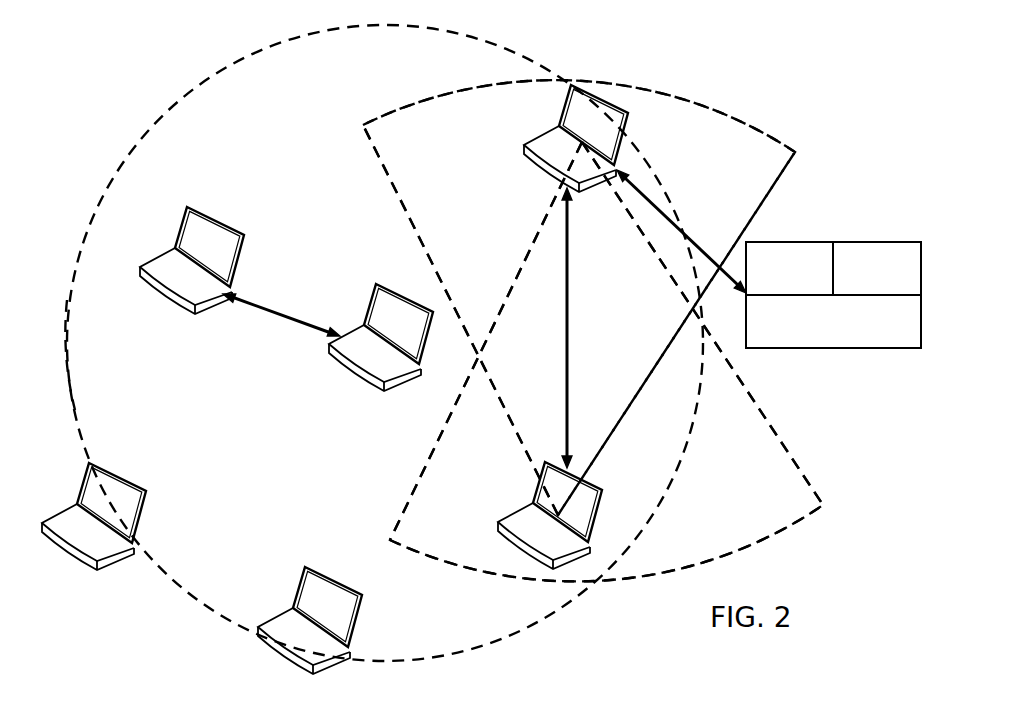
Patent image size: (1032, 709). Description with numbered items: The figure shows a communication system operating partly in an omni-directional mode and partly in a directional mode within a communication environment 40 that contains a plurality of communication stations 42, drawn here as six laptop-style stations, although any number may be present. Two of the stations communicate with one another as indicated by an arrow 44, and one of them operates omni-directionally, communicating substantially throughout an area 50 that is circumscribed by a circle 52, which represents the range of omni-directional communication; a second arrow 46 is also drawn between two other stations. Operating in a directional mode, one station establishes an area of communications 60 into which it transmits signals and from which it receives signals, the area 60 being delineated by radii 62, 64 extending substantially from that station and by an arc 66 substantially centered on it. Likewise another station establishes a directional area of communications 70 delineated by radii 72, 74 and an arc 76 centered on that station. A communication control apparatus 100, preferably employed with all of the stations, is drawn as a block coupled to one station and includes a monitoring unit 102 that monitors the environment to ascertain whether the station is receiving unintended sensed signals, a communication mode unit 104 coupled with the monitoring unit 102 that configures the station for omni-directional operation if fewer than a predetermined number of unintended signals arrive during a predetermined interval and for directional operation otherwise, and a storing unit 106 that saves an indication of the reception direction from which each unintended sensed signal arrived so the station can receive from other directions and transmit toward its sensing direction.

The communication environment 40 is at (657, 666).
The communication stations 42 is at (348, 379).
The arrow 44 is at (280, 319).
The communication link between devices 46 is at (569, 333).
The area 50 is at (73, 396).
The circle 52 is at (63, 346).
The area of communications 60 is at (763, 446).
The radius 62 is at (424, 456).
The radius 64 is at (812, 483).
The arc 66 is at (795, 525).
The area of communications 70 is at (688, 112).
The radius 72 is at (381, 167).
The radius 74 is at (785, 170).
The arc 76 is at (756, 128).
The communication control apparatus 100 is at (833, 316).
The monitoring unit 102 is at (804, 241).
The communication mode unit 104 is at (898, 241).
The storing unit 106 is at (863, 349).